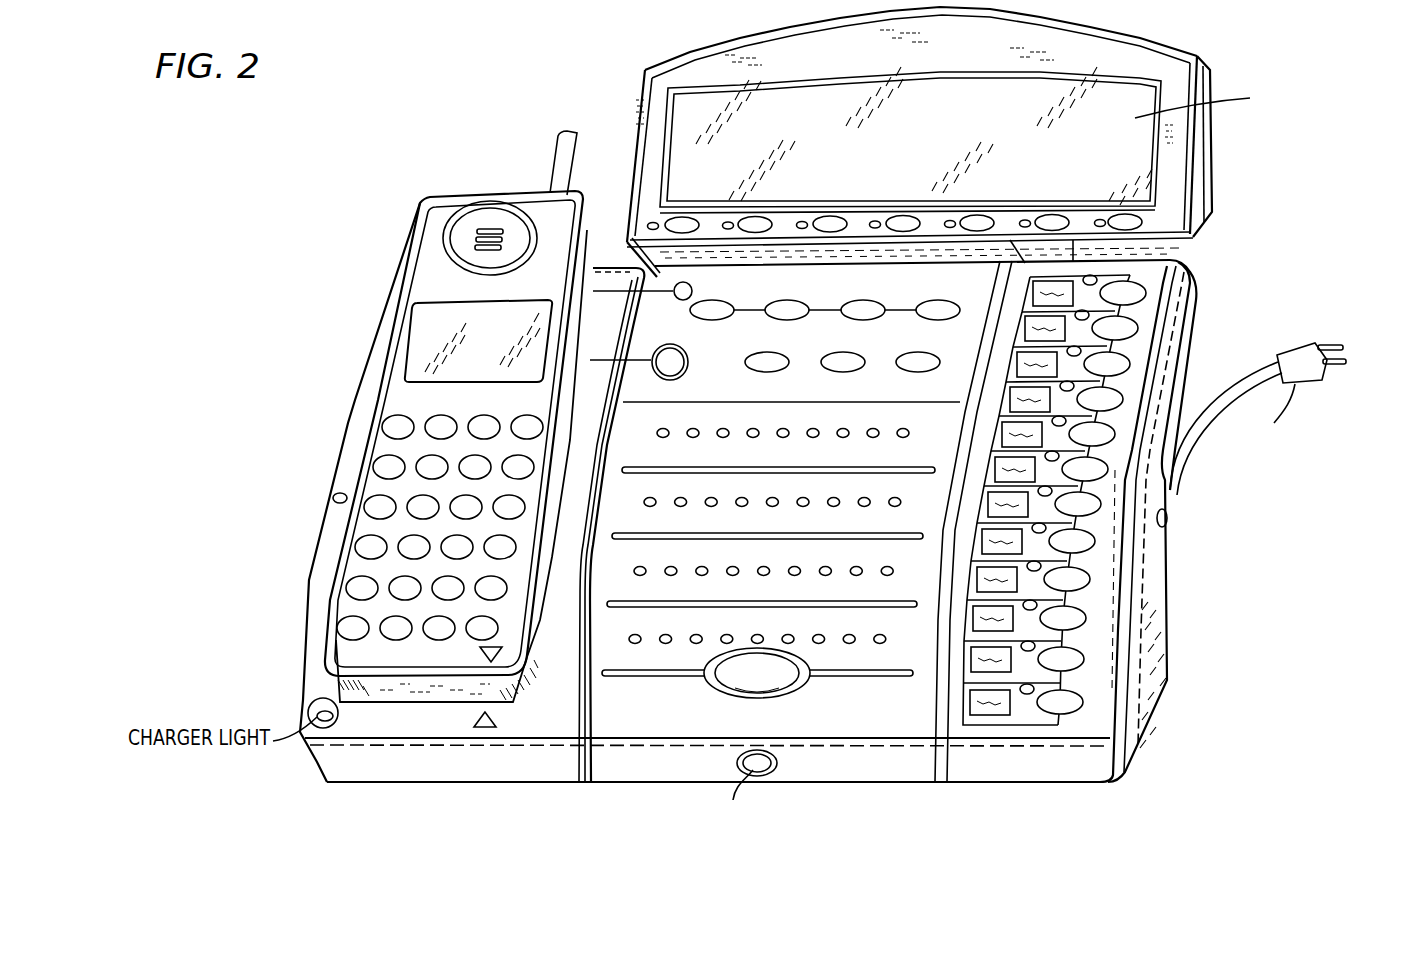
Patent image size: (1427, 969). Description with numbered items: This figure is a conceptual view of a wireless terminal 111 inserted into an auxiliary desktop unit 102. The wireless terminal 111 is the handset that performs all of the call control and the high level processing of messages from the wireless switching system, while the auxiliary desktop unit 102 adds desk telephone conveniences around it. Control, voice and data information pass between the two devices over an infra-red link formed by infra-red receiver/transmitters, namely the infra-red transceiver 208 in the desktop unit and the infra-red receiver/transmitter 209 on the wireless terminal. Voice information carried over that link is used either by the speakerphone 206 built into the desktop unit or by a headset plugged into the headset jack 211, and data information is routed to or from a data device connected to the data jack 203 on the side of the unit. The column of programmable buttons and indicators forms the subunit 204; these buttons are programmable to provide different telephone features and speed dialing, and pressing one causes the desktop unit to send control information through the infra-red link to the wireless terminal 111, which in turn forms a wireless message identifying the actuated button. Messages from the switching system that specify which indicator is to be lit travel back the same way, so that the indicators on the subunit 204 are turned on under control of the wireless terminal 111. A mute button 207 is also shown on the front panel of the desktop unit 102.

The auxiliary desktop unit 102 is at (1135, 357).
The wireless terminal 111 is at (417, 267).
The data jack 203 is at (1167, 520).
The subunit 204 is at (1088, 637).
The speakerphone 206 is at (677, 643).
The mute button 207 is at (765, 685).
The infra-red transceiver 208 is at (473, 724).
The infra-red receiver/transmitter (wireless terminal) 209 is at (485, 648).
The headset jack 211 is at (338, 496).